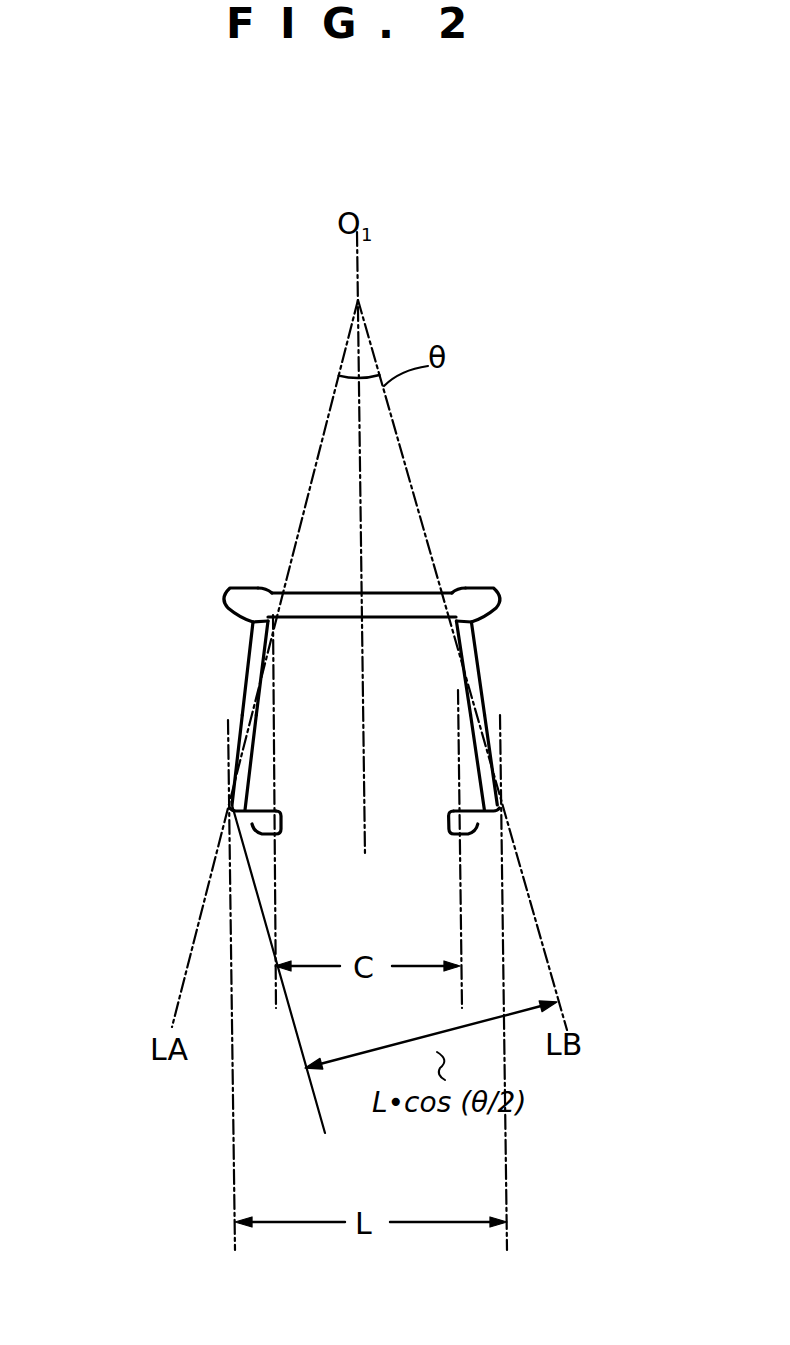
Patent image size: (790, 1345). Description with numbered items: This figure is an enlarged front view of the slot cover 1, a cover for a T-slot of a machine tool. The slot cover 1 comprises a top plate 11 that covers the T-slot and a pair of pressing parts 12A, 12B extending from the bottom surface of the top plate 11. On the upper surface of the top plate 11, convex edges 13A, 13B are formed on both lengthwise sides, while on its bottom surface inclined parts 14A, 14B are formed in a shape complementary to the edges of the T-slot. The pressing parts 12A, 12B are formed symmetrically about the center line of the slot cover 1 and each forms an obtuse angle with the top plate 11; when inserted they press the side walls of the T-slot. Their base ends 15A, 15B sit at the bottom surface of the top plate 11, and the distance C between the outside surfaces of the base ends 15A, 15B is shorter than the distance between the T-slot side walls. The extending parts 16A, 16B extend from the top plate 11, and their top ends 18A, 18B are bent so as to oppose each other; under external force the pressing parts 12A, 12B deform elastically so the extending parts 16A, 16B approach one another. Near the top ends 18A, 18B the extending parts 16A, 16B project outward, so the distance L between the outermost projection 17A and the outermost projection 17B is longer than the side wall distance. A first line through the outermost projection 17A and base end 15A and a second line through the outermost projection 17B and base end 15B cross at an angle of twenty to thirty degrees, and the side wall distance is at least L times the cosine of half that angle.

The slot cover 1 is at (614, 470).
The top plate 11 is at (402, 603).
The pressing part 12A is at (110, 632).
The pressing part 12B is at (620, 628).
The convex edge 13A is at (246, 590).
The convex edge 13B is at (478, 594).
The inclined part 14A is at (226, 600).
The inclined part 14B is at (495, 600).
The base end 15A is at (262, 622).
The base end 15B is at (460, 620).
The extending part 16A is at (245, 691).
The extending part 16B is at (482, 690).
The outermost projection 17A is at (232, 805).
The outermost projection 17B is at (500, 802).
The top end 18A is at (254, 824).
The top end 18B is at (476, 824).